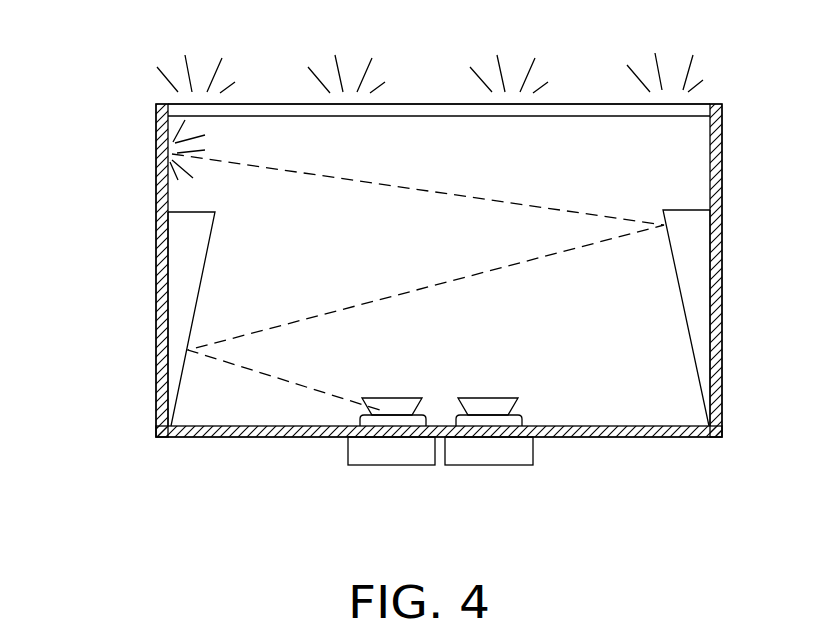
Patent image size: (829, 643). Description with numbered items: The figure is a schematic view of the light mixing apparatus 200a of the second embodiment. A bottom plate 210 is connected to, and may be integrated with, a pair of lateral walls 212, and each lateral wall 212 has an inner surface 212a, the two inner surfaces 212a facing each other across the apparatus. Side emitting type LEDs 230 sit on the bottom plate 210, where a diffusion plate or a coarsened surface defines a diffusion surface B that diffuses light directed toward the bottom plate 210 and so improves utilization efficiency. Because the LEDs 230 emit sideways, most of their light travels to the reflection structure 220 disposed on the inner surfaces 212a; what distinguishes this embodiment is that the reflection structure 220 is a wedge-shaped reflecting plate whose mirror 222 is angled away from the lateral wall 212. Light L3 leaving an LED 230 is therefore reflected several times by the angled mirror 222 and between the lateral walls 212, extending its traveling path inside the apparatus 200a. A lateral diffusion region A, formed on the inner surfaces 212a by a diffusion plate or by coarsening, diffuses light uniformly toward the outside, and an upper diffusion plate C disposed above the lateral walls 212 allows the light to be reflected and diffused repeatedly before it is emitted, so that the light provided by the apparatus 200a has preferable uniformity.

The light mixing apparatus 200a is at (732, 539).
The bottom plate 210 is at (198, 440).
The lateral wall 212 is at (157, 162).
The inner surface 212a is at (168, 285).
The reflection structure 220 is at (172, 312).
The mirror 222 is at (683, 308).
The side emitting type LED 230 is at (485, 458).
The lateral diffusion region A is at (172, 136).
The diffusion surface B is at (333, 424).
The upper diffusion plate C is at (584, 108).
The light L3 is at (262, 373).